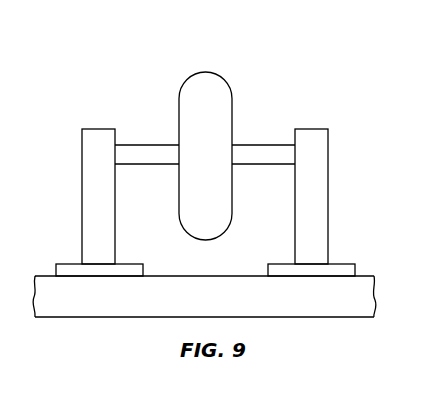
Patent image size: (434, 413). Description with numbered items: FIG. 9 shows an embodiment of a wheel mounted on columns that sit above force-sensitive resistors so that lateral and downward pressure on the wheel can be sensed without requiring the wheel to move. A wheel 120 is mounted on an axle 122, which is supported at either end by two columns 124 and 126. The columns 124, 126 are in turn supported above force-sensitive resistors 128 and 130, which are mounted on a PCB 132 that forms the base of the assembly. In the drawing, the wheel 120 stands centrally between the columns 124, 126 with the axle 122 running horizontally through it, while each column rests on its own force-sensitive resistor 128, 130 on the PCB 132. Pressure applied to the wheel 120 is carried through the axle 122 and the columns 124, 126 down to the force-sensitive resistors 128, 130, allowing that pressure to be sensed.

The wheel 120 is at (208, 72).
The axle 122 is at (150, 145).
The column 124 is at (100, 129).
The column 126 is at (310, 129).
The force-sensitive resistor 128 is at (68, 264).
The force-sensitive resistor 130 is at (344, 264).
The PCB 132 is at (217, 305).